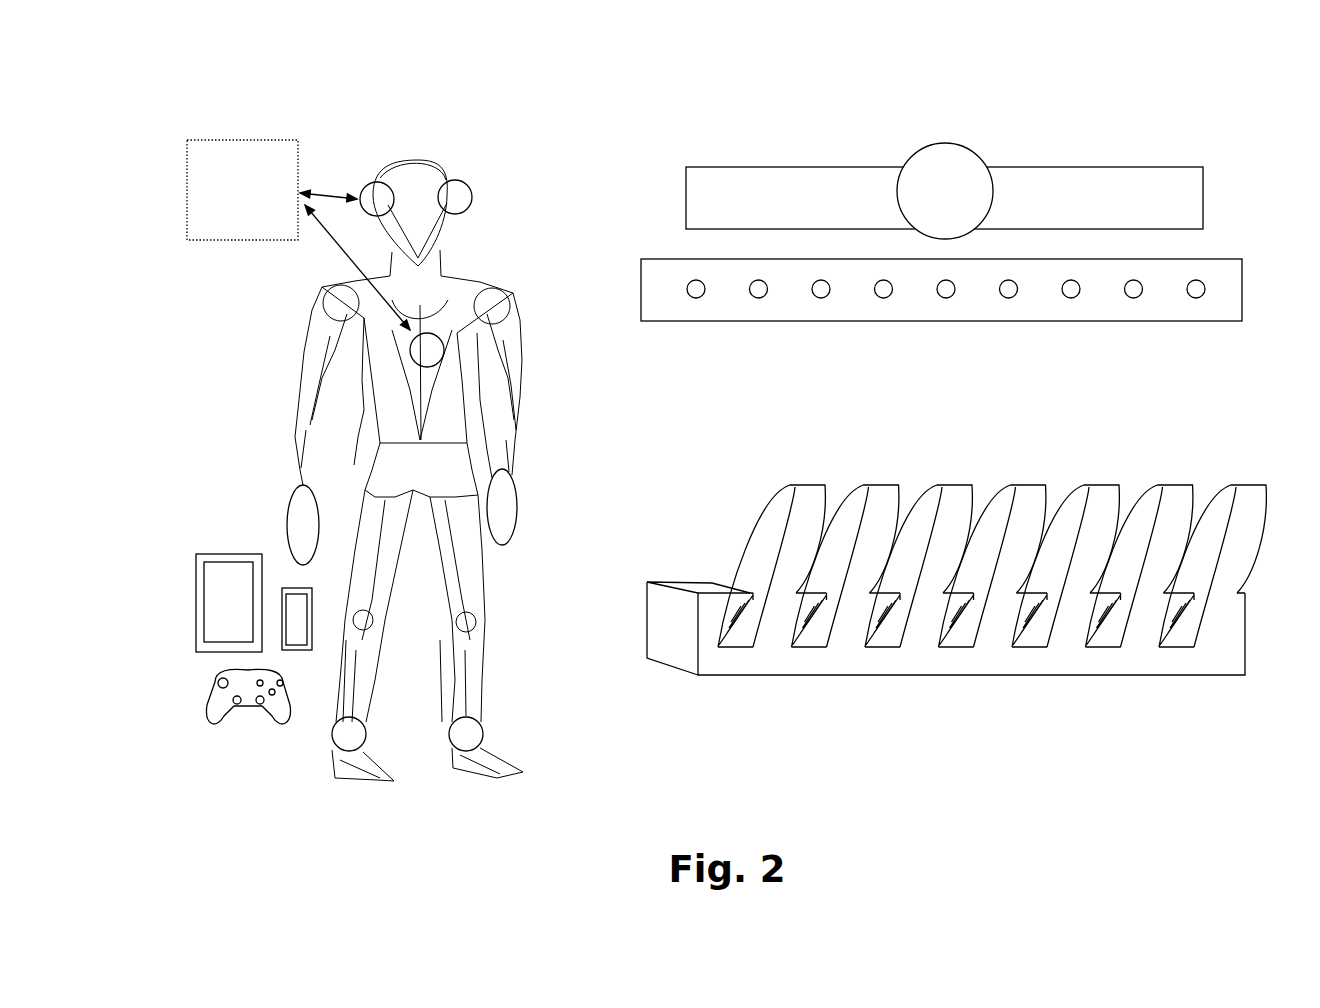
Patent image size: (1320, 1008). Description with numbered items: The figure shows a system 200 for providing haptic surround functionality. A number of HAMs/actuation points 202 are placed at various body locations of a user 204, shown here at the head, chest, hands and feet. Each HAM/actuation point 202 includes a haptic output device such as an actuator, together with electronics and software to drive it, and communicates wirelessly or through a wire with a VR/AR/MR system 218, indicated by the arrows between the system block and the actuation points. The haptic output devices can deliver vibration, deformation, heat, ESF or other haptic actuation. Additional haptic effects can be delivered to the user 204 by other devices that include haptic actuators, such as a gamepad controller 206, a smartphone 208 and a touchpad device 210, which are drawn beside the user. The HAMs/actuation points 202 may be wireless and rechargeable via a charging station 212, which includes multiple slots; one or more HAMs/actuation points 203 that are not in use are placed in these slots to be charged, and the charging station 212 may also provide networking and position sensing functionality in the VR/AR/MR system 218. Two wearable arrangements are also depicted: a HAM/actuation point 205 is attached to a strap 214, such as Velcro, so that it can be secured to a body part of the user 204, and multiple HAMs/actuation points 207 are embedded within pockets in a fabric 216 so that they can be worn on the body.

The system 200 is at (1070, 97).
The HAM/actuation point 202 is at (371, 184).
The HAM/actuation point 203 is at (797, 486).
The user 204 is at (421, 163).
The HAM/actuation point 205 is at (946, 144).
The gamepad controller 206 is at (290, 704).
The HAM/actuation point 207 is at (702, 297).
The smartphone 208 is at (300, 590).
The touchpad device 210 is at (222, 553).
The charging station 212 is at (673, 581).
The strap 214 is at (1092, 167).
The fabric 216 is at (1222, 259).
The VR/AR/MR system 218 is at (298, 235).